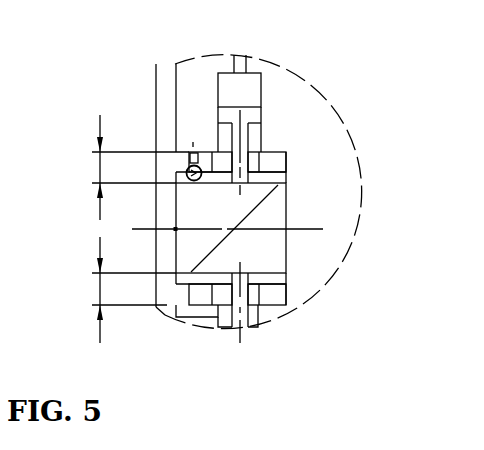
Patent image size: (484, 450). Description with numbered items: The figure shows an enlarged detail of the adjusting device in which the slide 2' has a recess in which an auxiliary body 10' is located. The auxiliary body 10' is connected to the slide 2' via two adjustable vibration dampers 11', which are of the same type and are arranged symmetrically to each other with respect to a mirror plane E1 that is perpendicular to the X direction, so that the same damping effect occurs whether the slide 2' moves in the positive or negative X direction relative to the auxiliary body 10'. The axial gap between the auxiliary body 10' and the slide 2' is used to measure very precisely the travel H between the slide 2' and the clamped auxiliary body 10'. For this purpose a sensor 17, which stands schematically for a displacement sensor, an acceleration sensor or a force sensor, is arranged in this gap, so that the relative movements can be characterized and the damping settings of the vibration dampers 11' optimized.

The slide 2' is at (279, 174).
The auxiliary body 10' is at (274, 199).
The vibration damper 11' is at (162, 199).
The sensor 17 is at (187, 169).
The mirror plane E1 is at (302, 214).
The travel H is at (130, 229).